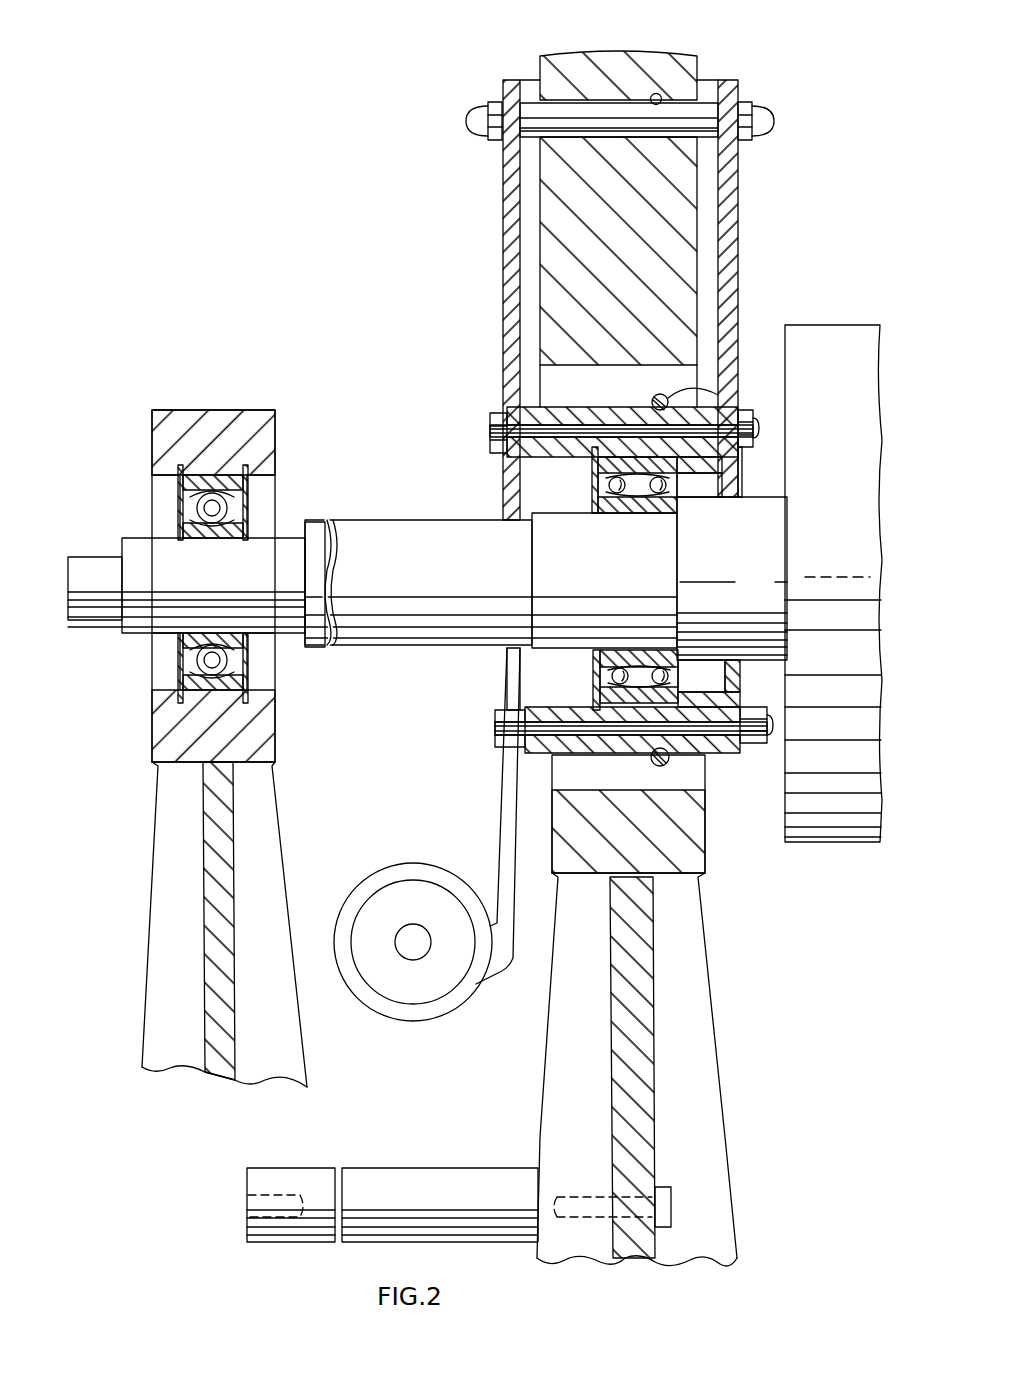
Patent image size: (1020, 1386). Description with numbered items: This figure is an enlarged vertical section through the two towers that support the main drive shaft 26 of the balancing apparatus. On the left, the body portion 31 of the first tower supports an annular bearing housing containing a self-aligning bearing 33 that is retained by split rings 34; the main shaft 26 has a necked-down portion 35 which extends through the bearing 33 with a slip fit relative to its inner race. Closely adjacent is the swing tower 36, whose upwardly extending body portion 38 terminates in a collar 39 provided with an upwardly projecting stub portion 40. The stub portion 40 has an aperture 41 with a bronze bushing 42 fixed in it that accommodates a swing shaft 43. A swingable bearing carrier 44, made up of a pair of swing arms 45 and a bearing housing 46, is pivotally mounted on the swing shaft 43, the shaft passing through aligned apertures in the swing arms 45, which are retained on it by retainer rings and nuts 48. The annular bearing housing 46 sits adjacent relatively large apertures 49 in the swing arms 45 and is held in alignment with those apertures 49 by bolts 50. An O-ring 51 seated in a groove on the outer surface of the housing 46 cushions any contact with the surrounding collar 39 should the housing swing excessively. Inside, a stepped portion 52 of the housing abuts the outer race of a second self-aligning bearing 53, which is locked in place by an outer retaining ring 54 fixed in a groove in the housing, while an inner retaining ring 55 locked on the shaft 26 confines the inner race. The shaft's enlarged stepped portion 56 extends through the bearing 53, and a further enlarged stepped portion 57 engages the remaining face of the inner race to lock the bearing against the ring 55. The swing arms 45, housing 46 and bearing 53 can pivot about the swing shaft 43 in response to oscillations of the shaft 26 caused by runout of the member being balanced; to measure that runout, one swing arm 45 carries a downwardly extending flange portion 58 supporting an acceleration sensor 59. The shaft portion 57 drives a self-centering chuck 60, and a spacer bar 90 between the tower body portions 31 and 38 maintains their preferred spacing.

The main drive shaft 26 is at (395, 522).
The body portion 31 is at (170, 890).
The self-aligning bearing 33 is at (199, 586).
The split rings 34 is at (172, 476).
The necked-down portion 35 is at (292, 548).
The swing tower 36 is at (616, 395).
The body portion 38 is at (710, 1047).
The collar 39 is at (703, 842).
The stub portion 40 is at (612, 58).
The aperture 41 is at (658, 94).
The bronze bushing 42 is at (580, 92).
The swing shaft 43 is at (700, 108).
The swingable bearing carrier 44 is at (752, 250).
The swing arms 45 is at (629, 300).
The bearing housing 46 is at (577, 410).
The nuts 48 is at (470, 120).
The apertures 49 is at (730, 478).
The bolts 50 is at (620, 432).
The O-ring 51 is at (672, 400).
The stepped portion 52 is at (710, 745).
The self-aligning bearing 53 is at (682, 655).
The outer retaining ring 54 is at (590, 466).
The inner retaining ring 55 is at (592, 502).
The enlarged stepped portion 56 is at (568, 633).
The enlarged stepped portion 57 is at (757, 508).
The flange portion 58 is at (503, 837).
The acceleration sensor 59 is at (388, 872).
The self-centering chuck 60 is at (858, 825).
The spacer bars 90 is at (456, 1170).